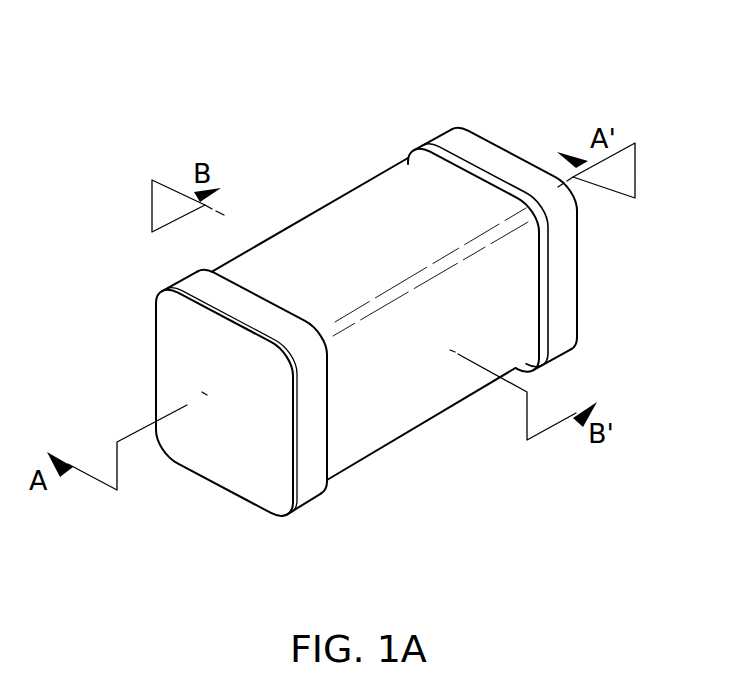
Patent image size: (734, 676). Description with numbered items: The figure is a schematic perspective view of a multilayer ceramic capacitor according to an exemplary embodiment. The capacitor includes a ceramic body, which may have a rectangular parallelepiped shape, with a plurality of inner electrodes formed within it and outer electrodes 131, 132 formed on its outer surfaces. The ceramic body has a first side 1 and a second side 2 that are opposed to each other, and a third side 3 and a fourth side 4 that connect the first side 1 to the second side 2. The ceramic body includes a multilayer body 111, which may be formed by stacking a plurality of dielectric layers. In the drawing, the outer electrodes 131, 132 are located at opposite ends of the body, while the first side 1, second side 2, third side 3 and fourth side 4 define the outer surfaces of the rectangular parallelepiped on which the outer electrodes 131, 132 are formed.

The first side 1 is at (307, 177).
The second side 2 is at (423, 391).
The third side 3 is at (235, 442).
The fourth side 4 is at (495, 128).
The multilayer body 111 is at (350, 213).
The outer electrode 131 is at (306, 484).
The outer electrode 132 is at (557, 313).